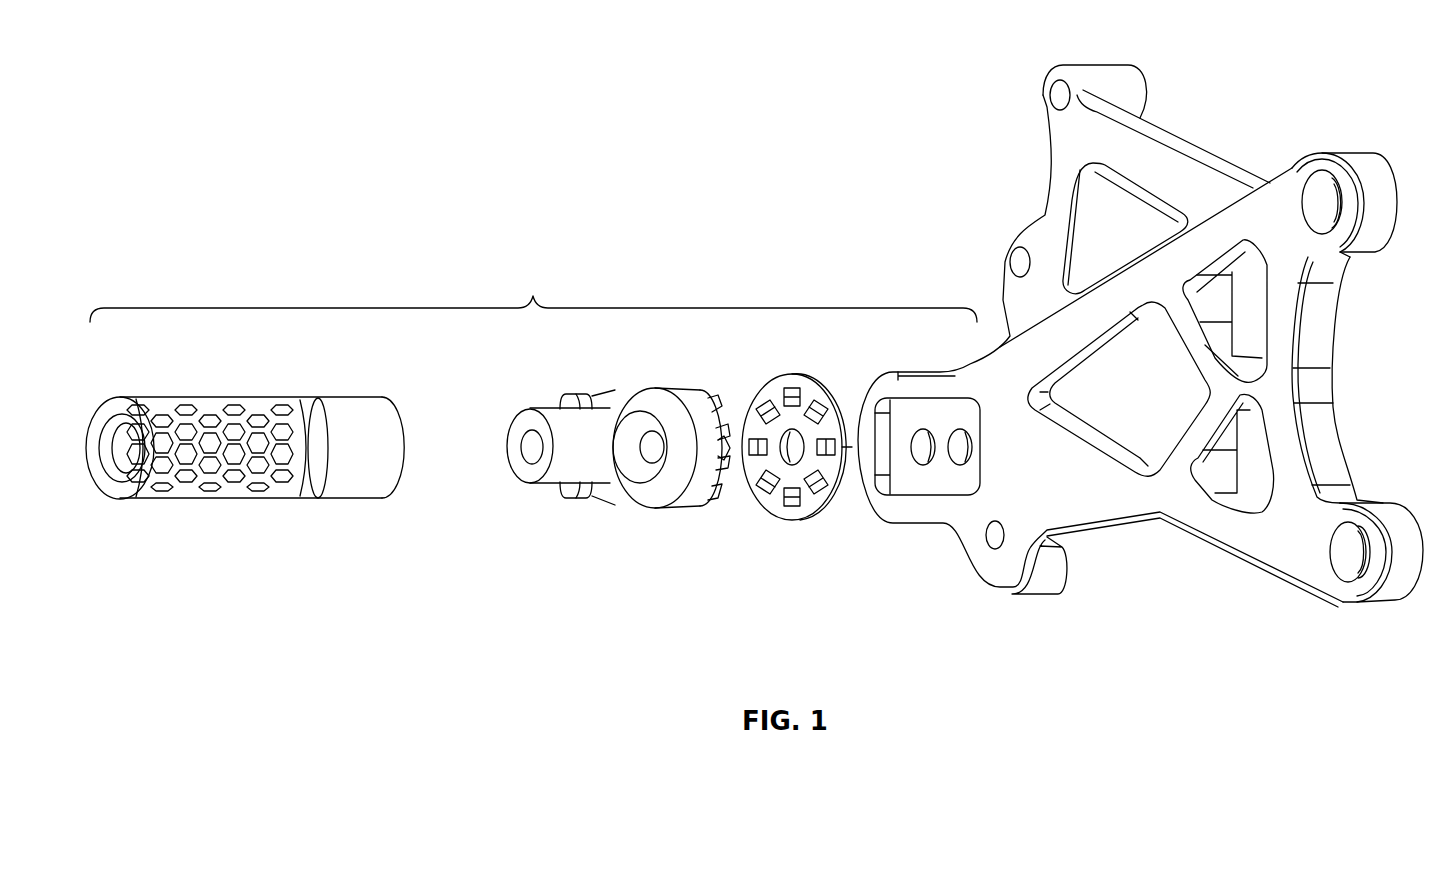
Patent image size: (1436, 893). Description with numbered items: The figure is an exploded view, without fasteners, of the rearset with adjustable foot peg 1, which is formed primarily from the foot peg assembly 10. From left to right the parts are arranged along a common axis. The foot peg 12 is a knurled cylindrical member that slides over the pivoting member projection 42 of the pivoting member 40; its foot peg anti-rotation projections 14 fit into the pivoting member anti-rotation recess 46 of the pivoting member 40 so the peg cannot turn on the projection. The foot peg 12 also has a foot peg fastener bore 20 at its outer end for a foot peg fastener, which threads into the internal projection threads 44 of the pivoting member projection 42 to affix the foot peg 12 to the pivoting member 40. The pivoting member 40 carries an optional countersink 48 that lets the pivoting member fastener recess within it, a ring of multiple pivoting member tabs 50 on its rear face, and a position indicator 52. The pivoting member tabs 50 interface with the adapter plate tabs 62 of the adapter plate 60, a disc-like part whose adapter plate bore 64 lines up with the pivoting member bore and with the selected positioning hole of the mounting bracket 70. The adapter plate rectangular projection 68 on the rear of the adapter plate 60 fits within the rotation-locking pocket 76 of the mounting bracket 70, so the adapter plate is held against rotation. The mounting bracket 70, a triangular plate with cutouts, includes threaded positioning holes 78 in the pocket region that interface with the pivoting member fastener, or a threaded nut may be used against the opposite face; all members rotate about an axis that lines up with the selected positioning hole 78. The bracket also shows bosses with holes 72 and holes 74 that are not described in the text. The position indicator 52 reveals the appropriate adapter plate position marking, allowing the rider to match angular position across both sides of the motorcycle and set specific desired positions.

The rearset with adjustable foot peg 1 is at (425, 122).
The foot peg assembly 10 is at (532, 296).
The foot peg 12 is at (228, 508).
The foot peg anti-rotation projections 14 is at (384, 500).
The foot peg fastener bore 20 is at (114, 474).
The pivoting member 40 is at (606, 503).
The pivoting member projection 42 is at (560, 420).
The internal projection threads 44 is at (530, 452).
The pivoting member anti-rotation recess 46 is at (586, 492).
The countersink 48 is at (640, 420).
The pivoting member tabs 50 is at (696, 392).
The position indicator 52 is at (724, 472).
The adapter plate 60 is at (818, 514).
The adapter plate tabs 62 is at (788, 388).
The adapter plate bore 64 is at (790, 460).
The adapter plate rectangular projection 68 is at (848, 396).
The mounting bracket 70 is at (1148, 558).
The mounting holes 72 is at (1327, 190).
The bracket holes 74 is at (1058, 93).
The rotation-locking pocket 76 is at (906, 488).
The threaded positioning holes 78 is at (958, 440).